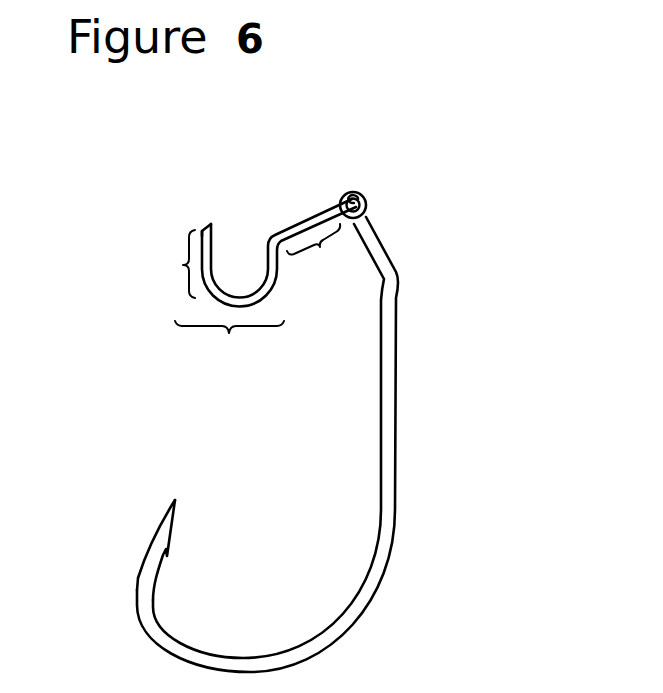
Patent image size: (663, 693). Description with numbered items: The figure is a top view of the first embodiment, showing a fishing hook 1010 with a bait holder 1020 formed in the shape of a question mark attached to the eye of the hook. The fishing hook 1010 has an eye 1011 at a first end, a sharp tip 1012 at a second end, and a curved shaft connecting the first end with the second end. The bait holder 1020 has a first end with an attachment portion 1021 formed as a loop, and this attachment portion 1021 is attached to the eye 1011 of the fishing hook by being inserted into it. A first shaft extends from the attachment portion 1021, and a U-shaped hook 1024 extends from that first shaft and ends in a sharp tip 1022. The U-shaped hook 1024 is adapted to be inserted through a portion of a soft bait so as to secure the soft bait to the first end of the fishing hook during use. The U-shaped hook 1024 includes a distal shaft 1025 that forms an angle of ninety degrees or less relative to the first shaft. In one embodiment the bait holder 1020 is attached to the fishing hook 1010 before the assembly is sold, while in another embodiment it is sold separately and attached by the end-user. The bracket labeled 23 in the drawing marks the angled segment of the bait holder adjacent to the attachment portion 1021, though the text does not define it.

The fishing hook 1010 is at (286, 391).
The eye 1011 is at (363, 195).
The sharp tip 1012 is at (167, 517).
The bait holder 1020 is at (212, 243).
The attachment portion 1021 is at (342, 195).
The sharp tip 1022 is at (203, 227).
The U-shaped hook 1024 is at (229, 348).
The distal shaft 1025 is at (146, 264).
The angled segment of clip 23 is at (316, 251).